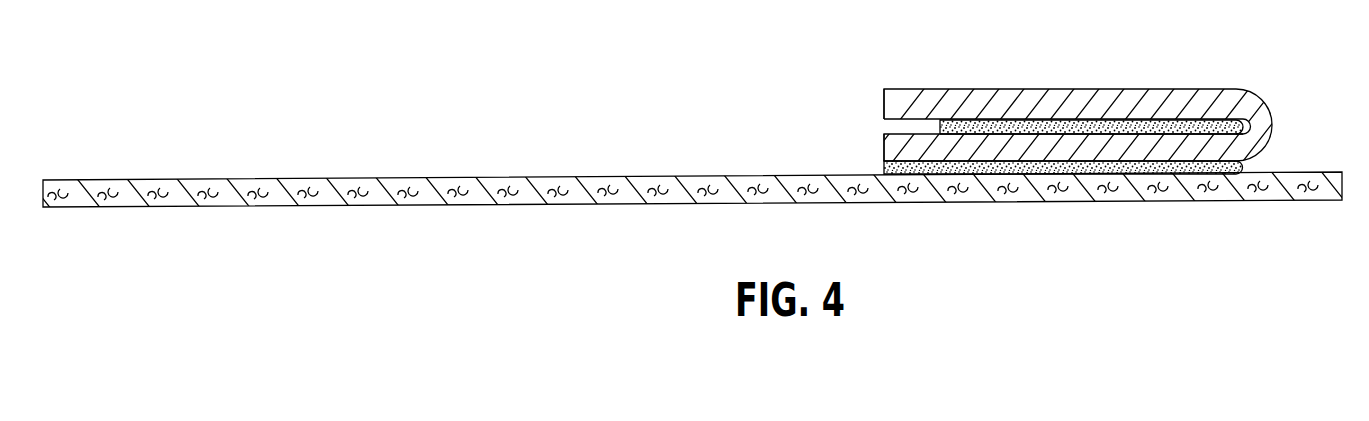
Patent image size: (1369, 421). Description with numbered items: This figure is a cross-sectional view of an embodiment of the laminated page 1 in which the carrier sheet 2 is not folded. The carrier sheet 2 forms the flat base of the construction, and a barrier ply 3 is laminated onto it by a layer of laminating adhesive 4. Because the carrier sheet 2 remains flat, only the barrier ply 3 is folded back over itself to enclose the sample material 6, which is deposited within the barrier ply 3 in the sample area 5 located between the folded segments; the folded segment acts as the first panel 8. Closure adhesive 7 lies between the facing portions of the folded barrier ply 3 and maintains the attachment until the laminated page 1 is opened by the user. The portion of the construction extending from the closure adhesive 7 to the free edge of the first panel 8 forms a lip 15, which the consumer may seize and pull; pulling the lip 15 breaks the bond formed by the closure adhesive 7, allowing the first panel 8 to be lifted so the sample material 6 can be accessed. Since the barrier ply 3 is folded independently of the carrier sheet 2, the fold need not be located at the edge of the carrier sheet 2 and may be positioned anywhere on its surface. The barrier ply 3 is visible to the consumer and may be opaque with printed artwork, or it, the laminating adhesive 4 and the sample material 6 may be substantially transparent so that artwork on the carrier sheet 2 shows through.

The laminated page 1 is at (144, 102).
The carrier sheet 2 is at (383, 178).
The barrier ply 3 is at (993, 91).
The laminating adhesive 4 is at (1246, 166).
The sample area 5 is at (1217, 92).
The sample material 6 is at (1142, 124).
The closure adhesive 7 is at (982, 126).
The first panel 8 is at (1094, 141).
The lip 15 is at (948, 83).